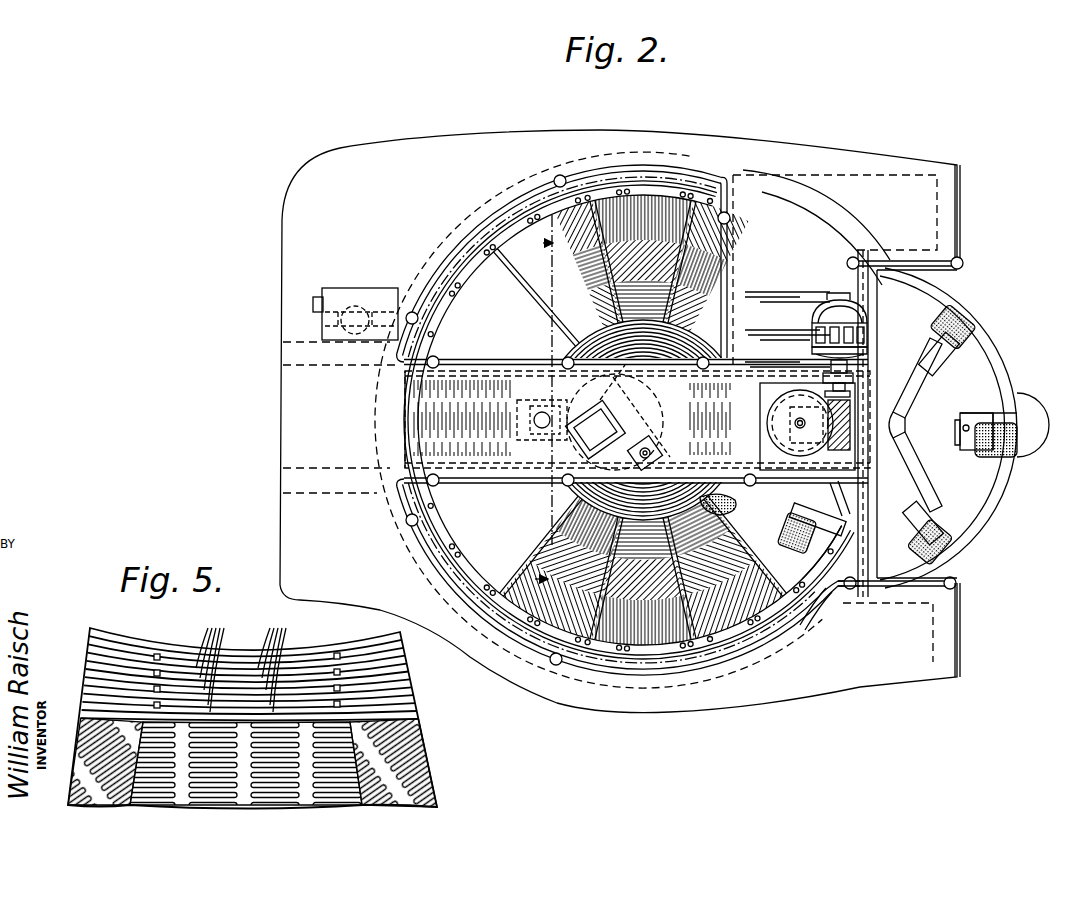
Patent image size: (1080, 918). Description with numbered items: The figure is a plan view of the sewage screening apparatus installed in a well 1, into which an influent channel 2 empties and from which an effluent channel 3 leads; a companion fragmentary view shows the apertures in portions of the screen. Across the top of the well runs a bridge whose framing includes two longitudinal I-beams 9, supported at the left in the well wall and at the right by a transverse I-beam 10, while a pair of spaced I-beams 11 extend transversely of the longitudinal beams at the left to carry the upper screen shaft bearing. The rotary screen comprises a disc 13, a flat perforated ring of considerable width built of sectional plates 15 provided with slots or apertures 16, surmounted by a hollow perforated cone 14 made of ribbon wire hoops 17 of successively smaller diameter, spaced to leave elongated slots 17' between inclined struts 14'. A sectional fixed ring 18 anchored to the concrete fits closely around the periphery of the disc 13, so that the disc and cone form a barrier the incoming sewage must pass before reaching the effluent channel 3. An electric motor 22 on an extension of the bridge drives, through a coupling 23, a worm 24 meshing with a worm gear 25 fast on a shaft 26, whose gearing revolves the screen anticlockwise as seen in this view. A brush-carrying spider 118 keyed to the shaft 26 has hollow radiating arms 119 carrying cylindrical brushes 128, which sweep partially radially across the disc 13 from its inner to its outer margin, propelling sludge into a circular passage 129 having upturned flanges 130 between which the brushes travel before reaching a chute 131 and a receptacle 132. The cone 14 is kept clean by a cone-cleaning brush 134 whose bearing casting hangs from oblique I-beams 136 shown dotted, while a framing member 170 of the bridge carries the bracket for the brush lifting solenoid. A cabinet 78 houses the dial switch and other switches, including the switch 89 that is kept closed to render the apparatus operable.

In FIG. 2, the well 1 is at (505, 232).
In FIG. 2, the influent channel 2 is at (296, 420).
In FIG. 2, the effluent channel 3 is at (935, 278).
In FIG. 2, the longitudinal I-beams 9 is at (540, 372).
In FIG. 2, the transverse I-beam 10 is at (870, 492).
In FIG. 2, the spaced I-beams 11 is at (542, 409).
In FIG. 2, the disc 13 is at (560, 215).
In FIG. 5, the disc 13 is at (432, 728).
In FIG. 2, the cone 14 is at (643, 428).
In FIG. 5, the cone 14 is at (264, 678).
In FIG. 5, the inclined struts 14' is at (244, 660).
In FIG. 2, the sectional plates 15 is at (623, 190).
In FIG. 5, the sectional plates 15 is at (80, 712).
In FIG. 2, the slots or apertures 16 is at (655, 215).
In FIG. 5, the slots or apertures 16 is at (278, 765).
In FIG. 5, the hoops 17 is at (270, 662).
In FIG. 5, the elongated slots 17' is at (206, 662).
In FIG. 2, the sectional fixed ring 18 is at (470, 282).
In FIG. 2, the electric motor 22 is at (815, 328).
In FIG. 2, the coupling 23 is at (830, 378).
In FIG. 2, the worm 24 is at (850, 410).
In FIG. 2, the worm gear 25 is at (770, 458).
In FIG. 2, the shaft 26 is at (800, 423).
In FIG. 2, the cabinet 78 is at (343, 287).
In FIG. 2, the switch 89 is at (316, 302).
In FIG. 2, the brush-carrying spider 118 is at (905, 443).
In FIG. 2, the hollow radiating arms 119 is at (915, 375).
In FIG. 2, the cylindrical brushes 128 is at (968, 335).
In FIG. 2, the circular passage 129 is at (832, 590).
In FIG. 2, the upturned flanges 130 is at (890, 545).
In FIG. 2, the chute 131 is at (995, 413).
In FIG. 2, the receptacle 132 is at (1030, 405).
In FIG. 2, the cone-cleaning brush 134 is at (802, 507).
In FIG. 2, the I-beams 136 is at (648, 443).
In FIG. 2, the framing member 170 is at (618, 417).